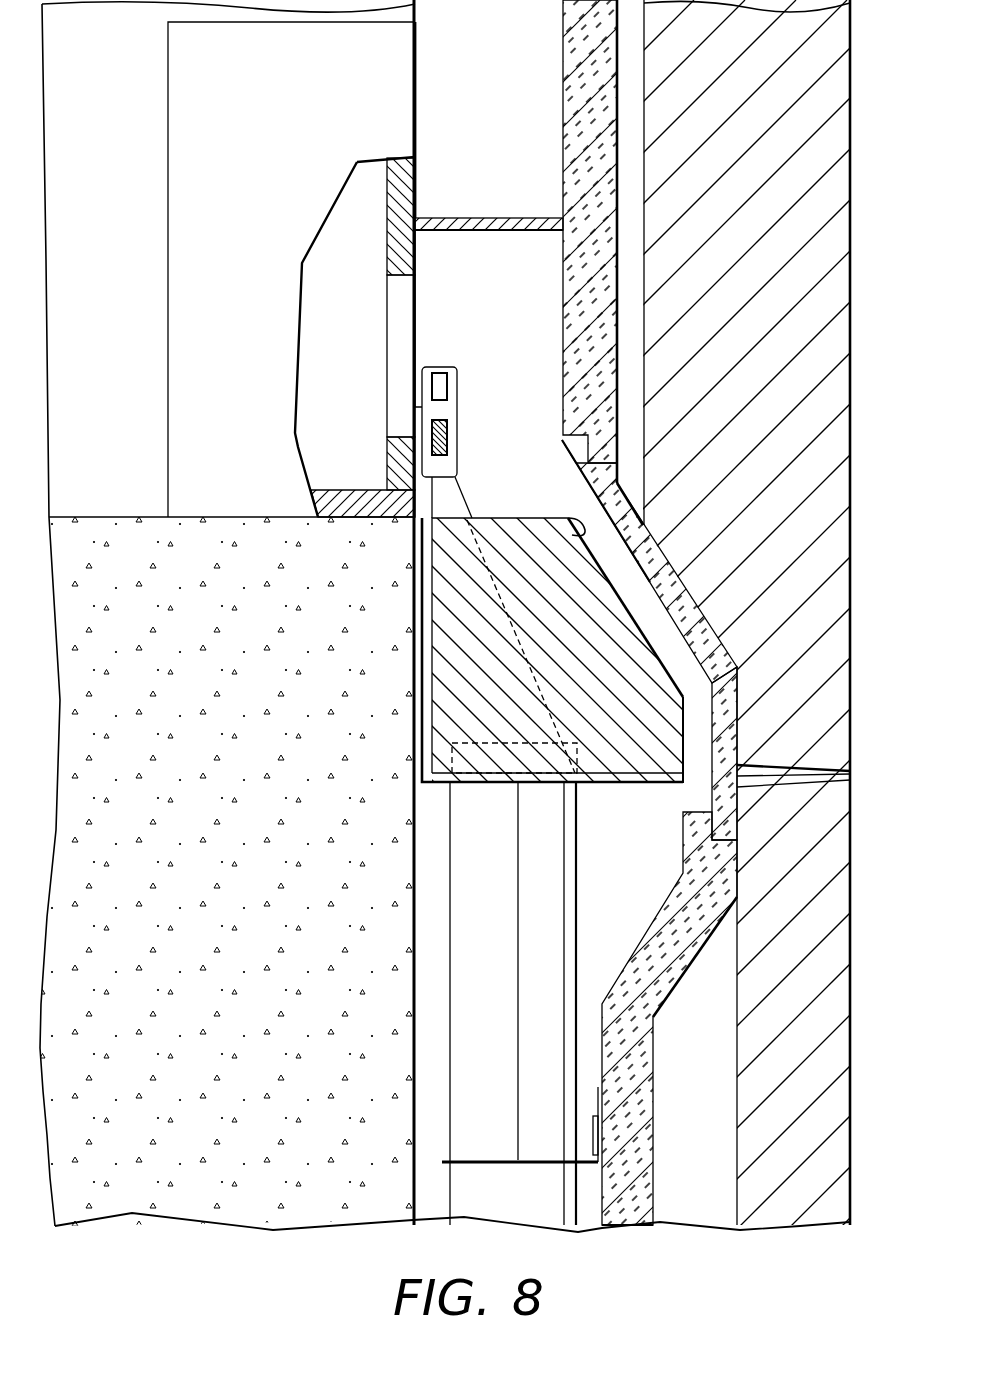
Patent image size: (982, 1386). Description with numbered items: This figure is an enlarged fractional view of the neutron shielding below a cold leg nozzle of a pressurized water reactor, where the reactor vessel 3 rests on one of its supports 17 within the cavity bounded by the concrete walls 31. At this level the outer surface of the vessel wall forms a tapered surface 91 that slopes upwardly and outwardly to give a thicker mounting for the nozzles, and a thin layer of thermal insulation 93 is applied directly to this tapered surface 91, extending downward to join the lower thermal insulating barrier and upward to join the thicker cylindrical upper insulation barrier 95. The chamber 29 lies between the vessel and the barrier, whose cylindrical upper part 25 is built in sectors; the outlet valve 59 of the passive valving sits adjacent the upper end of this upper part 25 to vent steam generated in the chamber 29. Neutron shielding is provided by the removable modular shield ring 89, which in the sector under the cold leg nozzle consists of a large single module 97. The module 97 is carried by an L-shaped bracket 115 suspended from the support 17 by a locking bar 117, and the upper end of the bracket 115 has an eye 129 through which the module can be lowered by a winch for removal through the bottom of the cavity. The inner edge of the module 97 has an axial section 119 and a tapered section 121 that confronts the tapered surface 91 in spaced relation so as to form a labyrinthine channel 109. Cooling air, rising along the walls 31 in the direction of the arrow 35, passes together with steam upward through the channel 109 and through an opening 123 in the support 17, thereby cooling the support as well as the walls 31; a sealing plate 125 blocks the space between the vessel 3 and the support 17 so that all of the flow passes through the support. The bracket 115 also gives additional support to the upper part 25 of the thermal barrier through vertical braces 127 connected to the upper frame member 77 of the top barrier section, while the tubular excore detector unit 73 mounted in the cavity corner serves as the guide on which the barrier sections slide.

The reactor vessel 3 is at (850, 387).
The support 17 is at (193, 131).
The cylindrical upper part 25 is at (630, 1207).
The chamber 29 is at (713, 1103).
The concrete walls 31 is at (426, 1028).
The arrow 35 is at (395, 344).
The outlet valve 59 is at (668, 920).
The tubular excore detector unit 73 is at (470, 940).
The upper frame member 77 is at (483, 1160).
The shield ring 89 is at (400, 607).
The tapered surface 91 is at (700, 633).
The thermal insulation 93 is at (638, 537).
The upper insulation barrier 95 is at (563, 42).
The large module 97 is at (447, 676).
The channel 109 is at (652, 615).
The L-shaped bracket 115 is at (428, 790).
The locking bar 117 is at (448, 434).
The axial section 119 is at (686, 770).
The tapered section 121 is at (585, 518).
The opening 123 is at (403, 276).
The sealing plate 125 is at (440, 218).
The vertical brace 127 is at (545, 927).
The eye 129 is at (452, 386).